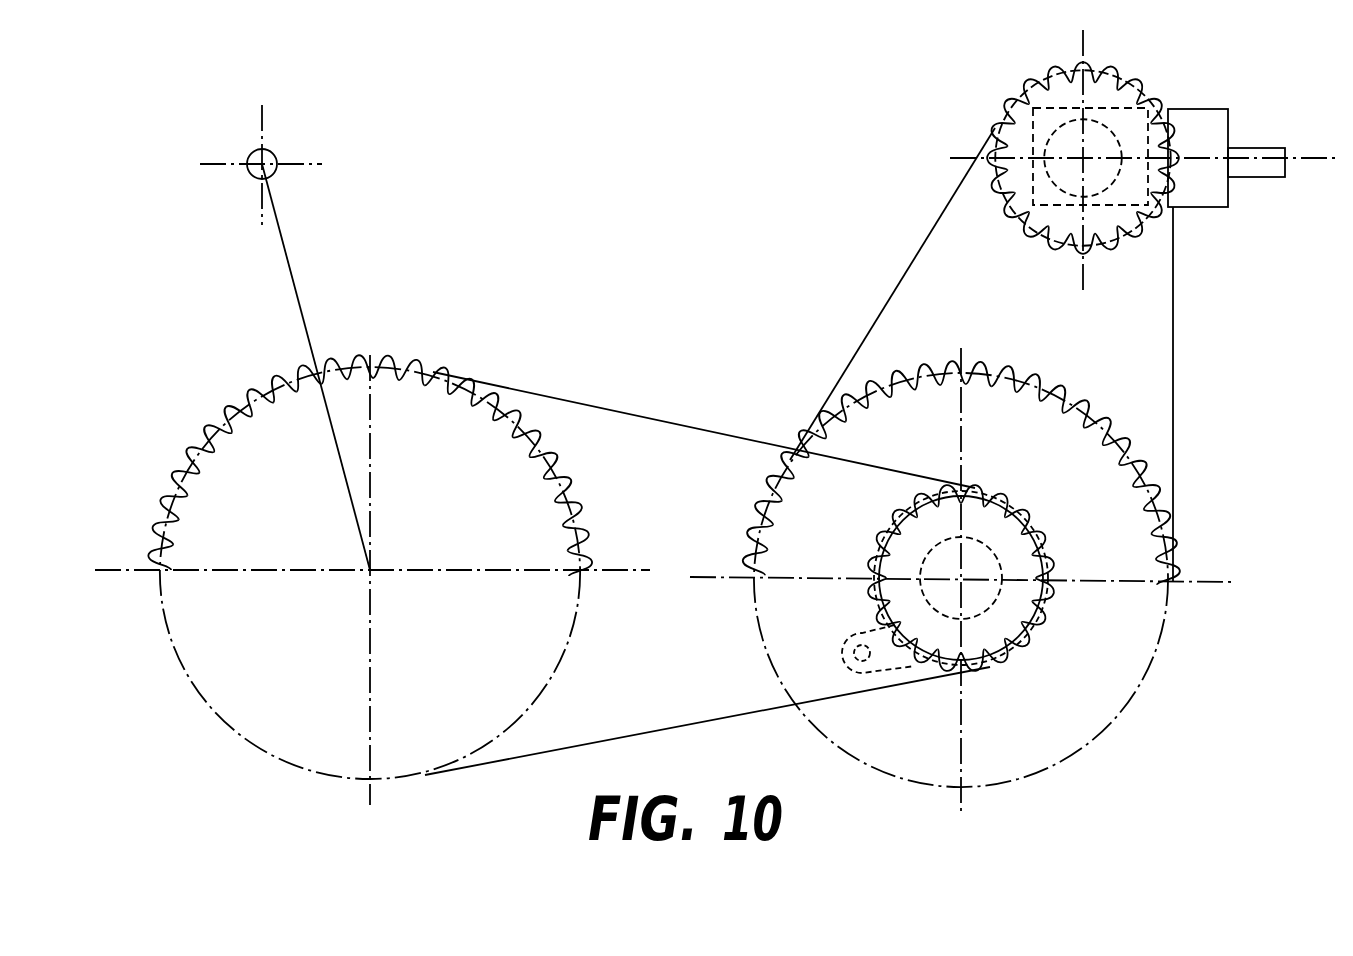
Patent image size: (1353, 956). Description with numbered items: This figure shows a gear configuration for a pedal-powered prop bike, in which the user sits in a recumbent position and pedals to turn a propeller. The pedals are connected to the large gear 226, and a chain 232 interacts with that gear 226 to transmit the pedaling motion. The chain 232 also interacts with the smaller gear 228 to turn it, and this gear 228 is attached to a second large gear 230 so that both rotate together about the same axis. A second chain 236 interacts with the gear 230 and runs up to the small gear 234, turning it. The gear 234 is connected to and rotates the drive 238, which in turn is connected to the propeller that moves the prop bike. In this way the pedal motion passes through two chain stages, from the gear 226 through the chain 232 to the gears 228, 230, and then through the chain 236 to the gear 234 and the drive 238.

The gear 226 is at (445, 375).
The gear 228 is at (1042, 530).
The gear 230 is at (1083, 403).
The chain 232 is at (683, 425).
The gear 234 is at (1138, 82).
The chain 236 is at (921, 248).
The drive 238 is at (1228, 126).